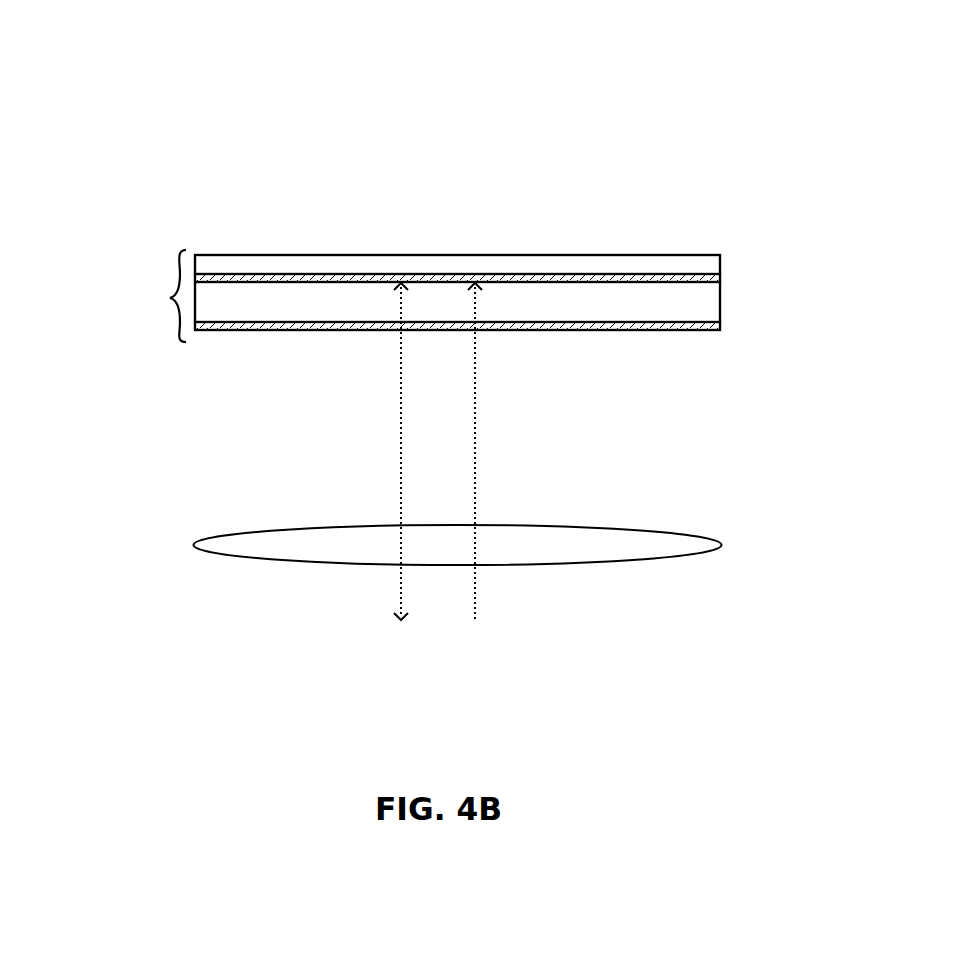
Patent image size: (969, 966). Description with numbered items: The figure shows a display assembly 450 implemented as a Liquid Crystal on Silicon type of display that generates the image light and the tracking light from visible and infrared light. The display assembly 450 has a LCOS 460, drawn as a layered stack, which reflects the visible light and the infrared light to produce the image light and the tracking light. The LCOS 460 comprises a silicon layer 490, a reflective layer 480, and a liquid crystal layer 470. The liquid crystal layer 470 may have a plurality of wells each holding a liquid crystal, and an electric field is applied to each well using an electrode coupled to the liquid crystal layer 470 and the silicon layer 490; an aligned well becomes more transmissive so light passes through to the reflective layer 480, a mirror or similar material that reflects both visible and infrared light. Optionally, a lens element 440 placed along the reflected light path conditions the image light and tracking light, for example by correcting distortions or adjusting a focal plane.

The display assembly 450 is at (468, 52).
The LCOS 460 is at (166, 298).
The silicon layer 490 is at (720, 254).
The reflective layer 480 is at (720, 277).
The liquid crystal layer 470 is at (720, 301).
The lens element 440 is at (625, 547).